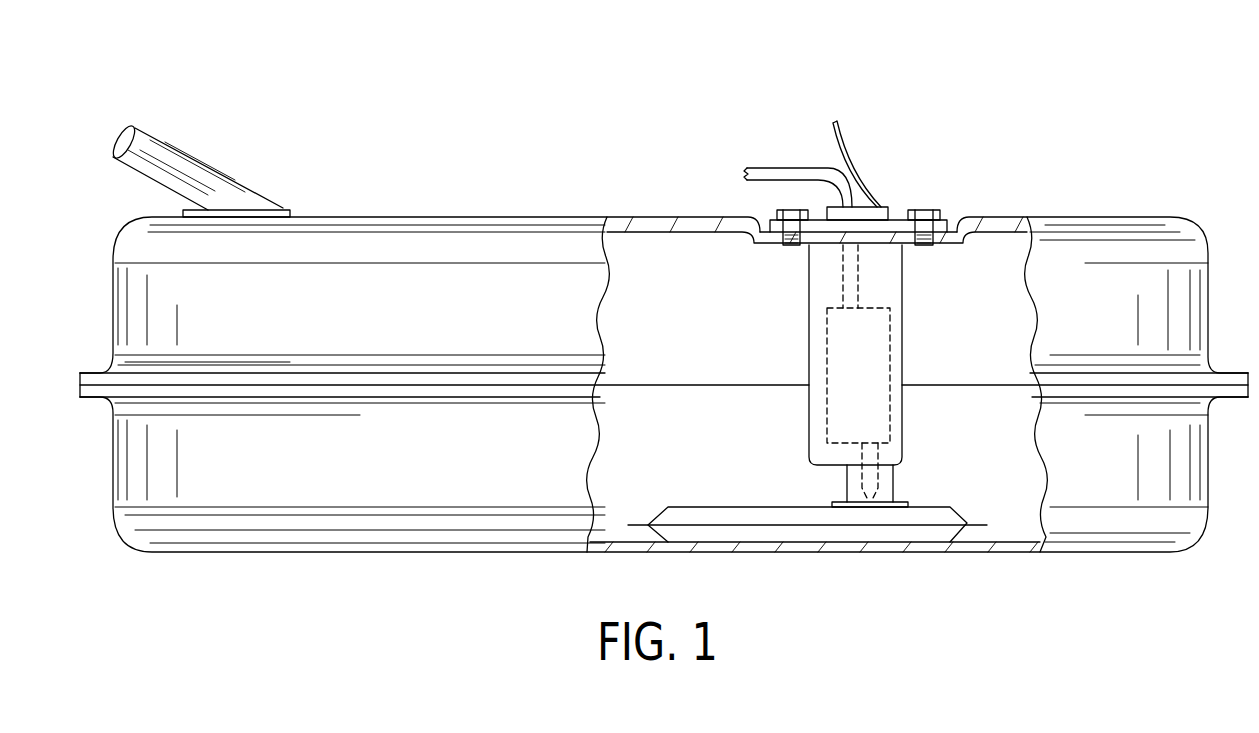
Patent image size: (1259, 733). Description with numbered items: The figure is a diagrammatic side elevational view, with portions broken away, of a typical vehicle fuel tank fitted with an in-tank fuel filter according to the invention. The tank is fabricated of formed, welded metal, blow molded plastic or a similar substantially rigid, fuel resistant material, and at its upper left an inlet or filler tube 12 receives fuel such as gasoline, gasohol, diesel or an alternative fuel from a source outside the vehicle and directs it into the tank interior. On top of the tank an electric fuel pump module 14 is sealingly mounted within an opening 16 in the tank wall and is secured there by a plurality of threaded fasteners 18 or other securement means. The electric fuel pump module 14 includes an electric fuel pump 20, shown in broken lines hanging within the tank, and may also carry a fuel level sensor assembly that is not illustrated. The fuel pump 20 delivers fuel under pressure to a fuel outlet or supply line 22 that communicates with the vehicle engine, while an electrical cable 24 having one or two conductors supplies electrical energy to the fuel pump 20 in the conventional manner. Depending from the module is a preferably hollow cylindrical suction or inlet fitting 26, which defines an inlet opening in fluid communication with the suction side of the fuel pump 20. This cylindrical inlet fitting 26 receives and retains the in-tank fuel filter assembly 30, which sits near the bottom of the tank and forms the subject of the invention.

The inlet or filler tube 12 is at (178, 150).
The electric fuel pump module 14 is at (898, 172).
The opening 16 is at (780, 245).
The threaded fasteners 18 is at (940, 208).
The electric fuel pump 20 is at (855, 380).
The fuel outlet or supply line 22 is at (763, 165).
The electrical cable 24 is at (846, 135).
The suction or inlet fitting 26 is at (887, 503).
The in-tank fuel filter assembly 30 is at (933, 505).